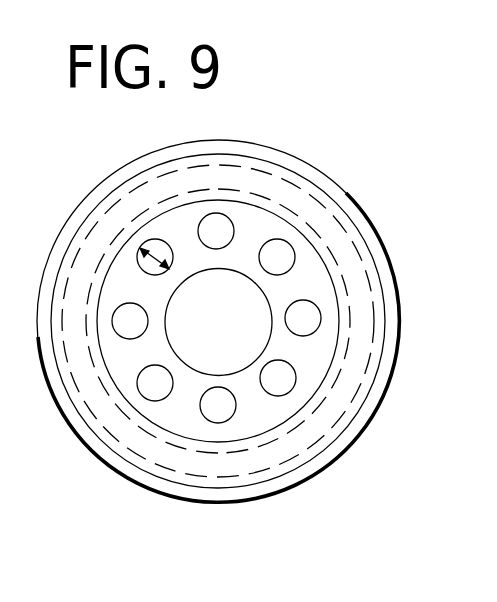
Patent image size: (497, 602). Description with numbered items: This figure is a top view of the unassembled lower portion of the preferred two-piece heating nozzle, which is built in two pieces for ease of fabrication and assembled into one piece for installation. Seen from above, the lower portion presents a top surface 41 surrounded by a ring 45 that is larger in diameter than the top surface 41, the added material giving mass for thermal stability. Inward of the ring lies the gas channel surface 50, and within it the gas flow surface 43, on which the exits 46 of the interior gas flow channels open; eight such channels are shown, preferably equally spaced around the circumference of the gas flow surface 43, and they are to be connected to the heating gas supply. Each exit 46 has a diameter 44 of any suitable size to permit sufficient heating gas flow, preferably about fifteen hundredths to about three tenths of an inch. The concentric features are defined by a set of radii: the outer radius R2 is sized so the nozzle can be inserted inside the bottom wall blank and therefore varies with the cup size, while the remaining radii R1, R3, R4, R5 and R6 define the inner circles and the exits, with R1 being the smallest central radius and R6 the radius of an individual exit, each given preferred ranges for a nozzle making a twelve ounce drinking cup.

The top surface 41 is at (337, 443).
The gas flow surface 43 is at (245, 422).
The diameter 44 is at (155, 249).
The ring 45 is at (213, 140).
The exits 46 is at (145, 397).
The gas channel surface 50 is at (270, 457).
The radius R1 is at (242, 273).
The radius R2 is at (341, 196).
The radius R3 is at (360, 259).
The radius R4 is at (362, 299).
The radius R5 is at (332, 358).
The radius R6 is at (288, 387).